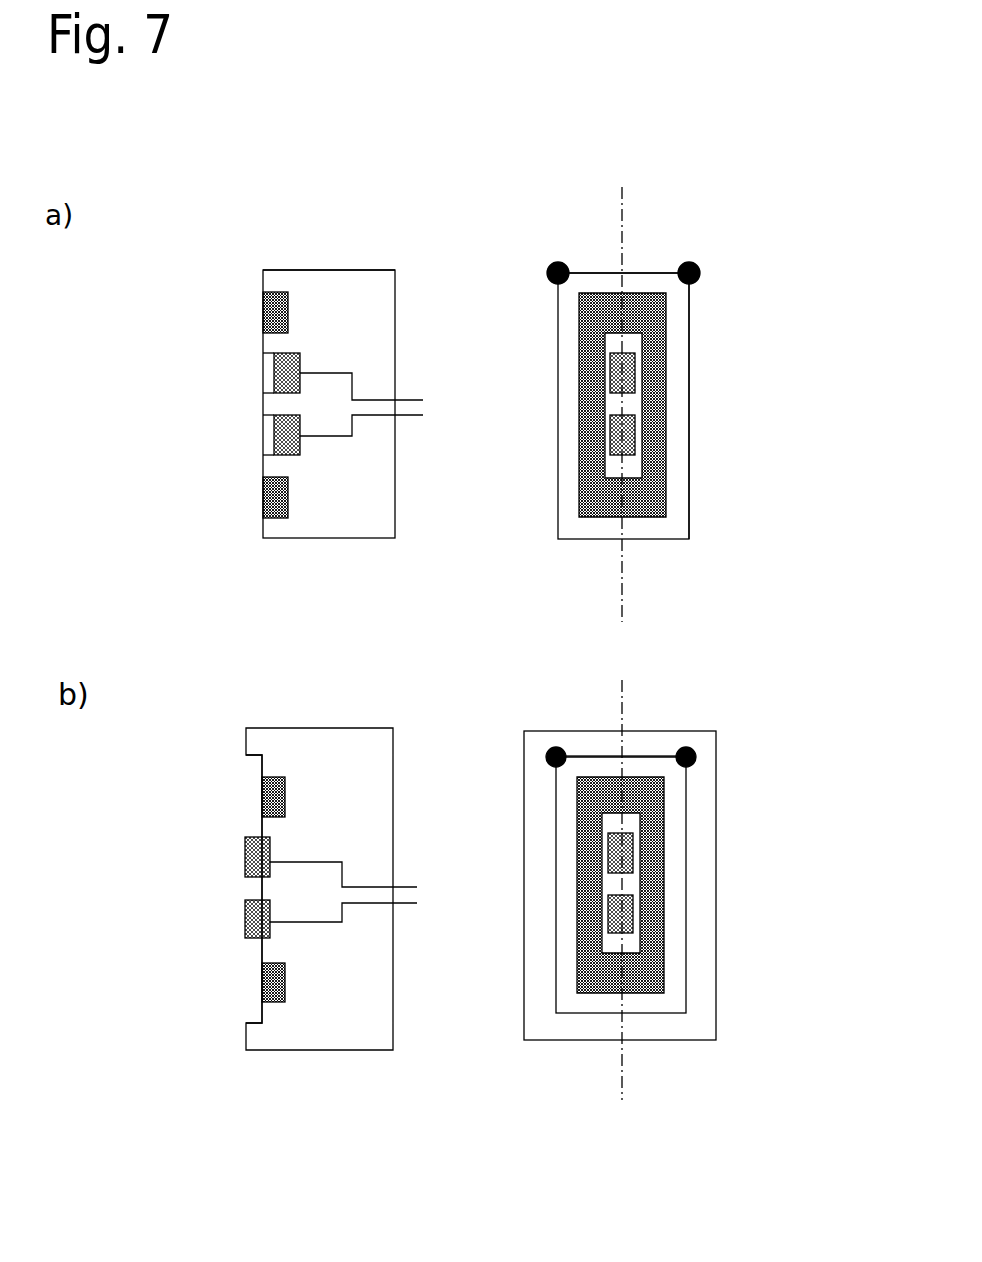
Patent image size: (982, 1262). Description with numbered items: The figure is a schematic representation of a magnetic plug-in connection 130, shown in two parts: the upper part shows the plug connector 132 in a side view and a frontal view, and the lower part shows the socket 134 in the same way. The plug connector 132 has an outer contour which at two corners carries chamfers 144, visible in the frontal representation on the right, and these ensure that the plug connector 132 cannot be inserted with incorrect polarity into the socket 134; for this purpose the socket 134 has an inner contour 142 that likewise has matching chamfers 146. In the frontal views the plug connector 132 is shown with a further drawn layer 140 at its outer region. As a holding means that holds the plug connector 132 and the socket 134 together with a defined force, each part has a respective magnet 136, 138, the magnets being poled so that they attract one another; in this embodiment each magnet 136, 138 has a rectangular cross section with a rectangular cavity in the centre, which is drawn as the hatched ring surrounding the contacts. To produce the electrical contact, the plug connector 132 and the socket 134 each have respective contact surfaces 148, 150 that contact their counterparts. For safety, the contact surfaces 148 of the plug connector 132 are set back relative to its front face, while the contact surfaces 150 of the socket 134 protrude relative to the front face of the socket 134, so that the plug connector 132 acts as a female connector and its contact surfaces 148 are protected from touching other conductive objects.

The magnetic plug-in connection 130 is at (730, 207).
The plug connector 132 is at (336, 269).
The socket 134 is at (350, 729).
The magnet 136 is at (263, 316).
The magnet 138 is at (262, 790).
The cover layer 140 is at (281, 270).
The inner contour 142 is at (250, 767).
The chamfers 144 is at (556, 264).
The chamfers 146 is at (555, 747).
The contact surfaces 148 is at (267, 373).
The contact surfaces 150 is at (245, 855).